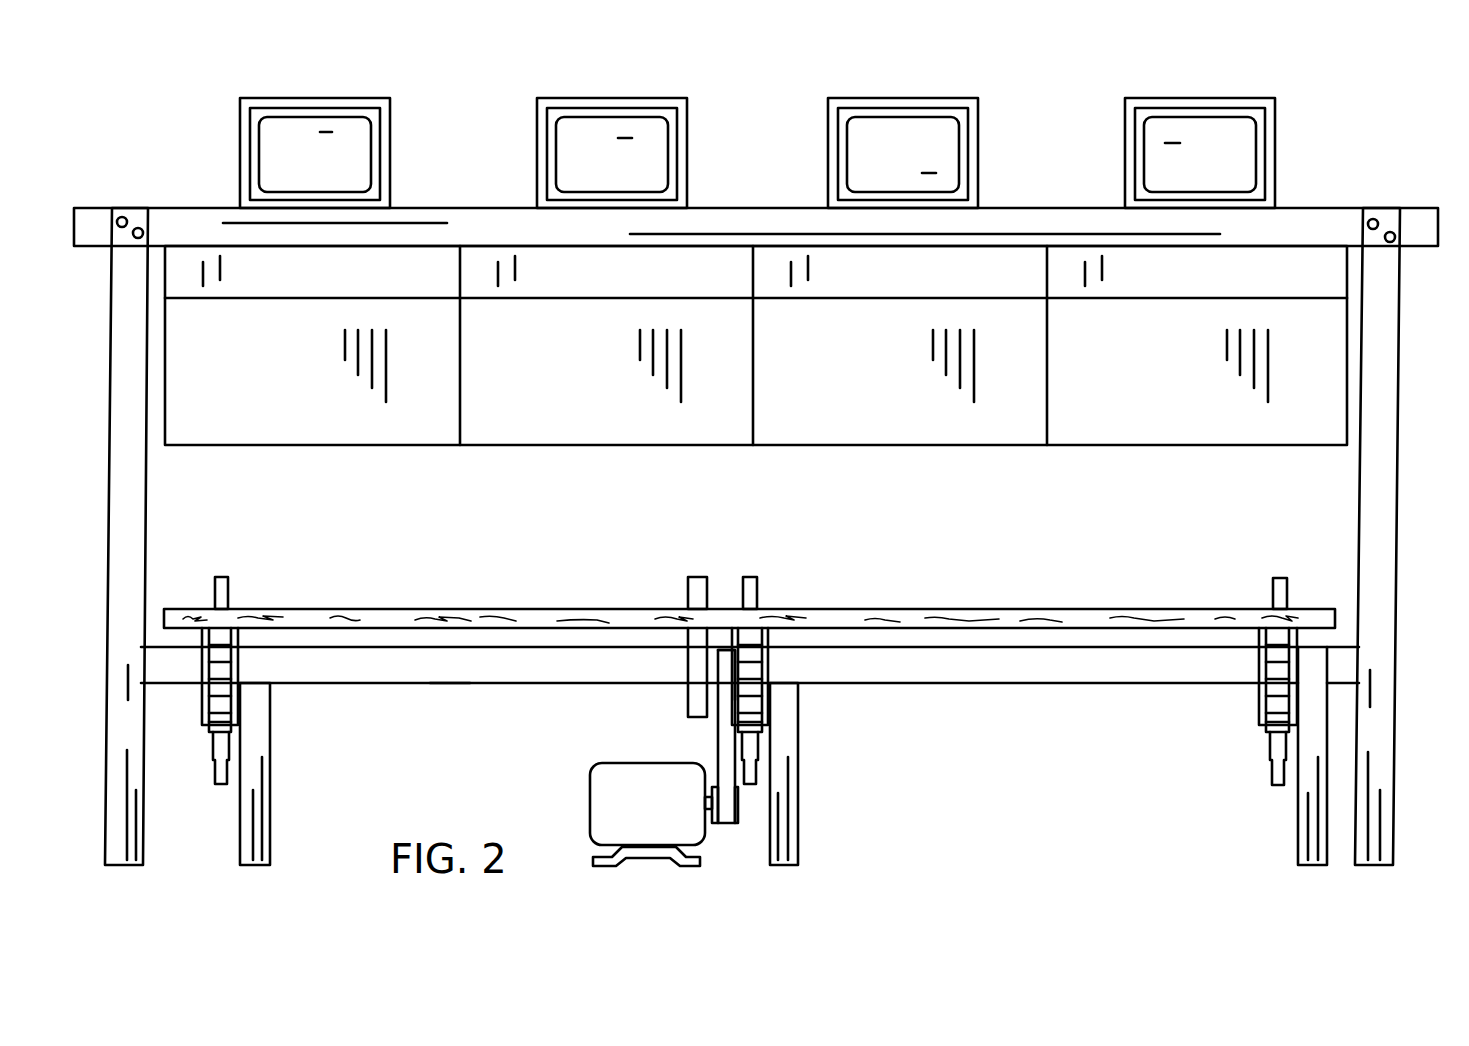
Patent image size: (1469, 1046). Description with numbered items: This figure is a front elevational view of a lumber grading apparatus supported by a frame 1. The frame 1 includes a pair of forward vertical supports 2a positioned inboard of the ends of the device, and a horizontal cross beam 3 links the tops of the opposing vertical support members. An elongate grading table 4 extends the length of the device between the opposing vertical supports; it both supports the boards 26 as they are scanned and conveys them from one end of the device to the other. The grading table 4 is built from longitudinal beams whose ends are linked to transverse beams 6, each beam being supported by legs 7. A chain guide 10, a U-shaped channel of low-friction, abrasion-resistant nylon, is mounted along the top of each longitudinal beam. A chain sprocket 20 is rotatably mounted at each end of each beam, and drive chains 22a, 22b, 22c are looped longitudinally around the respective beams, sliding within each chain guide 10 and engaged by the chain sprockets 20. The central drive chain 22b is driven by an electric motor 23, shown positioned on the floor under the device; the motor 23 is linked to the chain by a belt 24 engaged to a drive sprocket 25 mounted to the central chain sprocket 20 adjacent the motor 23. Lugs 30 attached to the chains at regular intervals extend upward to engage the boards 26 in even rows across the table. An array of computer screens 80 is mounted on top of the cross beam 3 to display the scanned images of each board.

The frame 1 is at (756, 323).
The forward vertical supports 2a is at (126, 494).
The horizontal cross beam 3 is at (185, 222).
The grading table 4 is at (452, 698).
The transverse beams 6 is at (527, 668).
The legs 7 is at (262, 813).
The chain guide 10 is at (743, 662).
The chain sprocket 20 is at (202, 662).
The drive chain 22a is at (762, 703).
The central drive chain 22b is at (233, 703).
The drive chain 22c is at (1268, 703).
The electric motor 23 is at (643, 780).
The belt 24 is at (725, 742).
The drive sprocket 25 is at (717, 660).
The boards 26 is at (535, 618).
The lugs 30 is at (221, 584).
The computer screens 80 is at (360, 128).